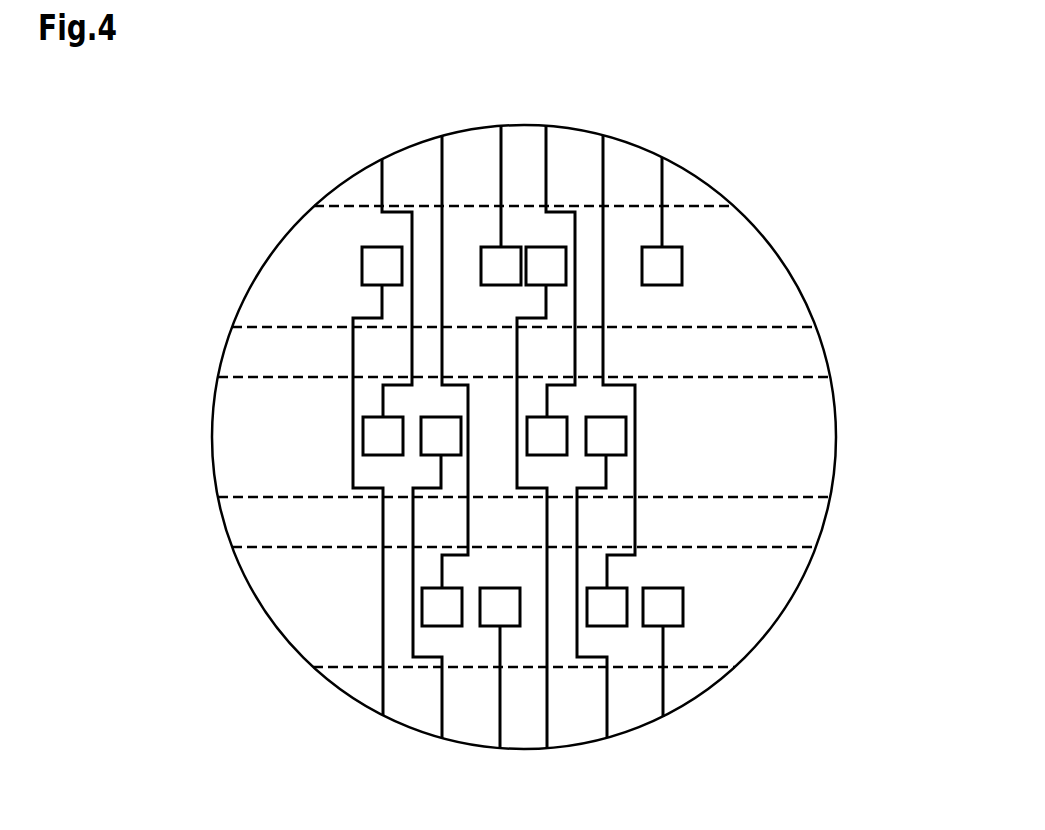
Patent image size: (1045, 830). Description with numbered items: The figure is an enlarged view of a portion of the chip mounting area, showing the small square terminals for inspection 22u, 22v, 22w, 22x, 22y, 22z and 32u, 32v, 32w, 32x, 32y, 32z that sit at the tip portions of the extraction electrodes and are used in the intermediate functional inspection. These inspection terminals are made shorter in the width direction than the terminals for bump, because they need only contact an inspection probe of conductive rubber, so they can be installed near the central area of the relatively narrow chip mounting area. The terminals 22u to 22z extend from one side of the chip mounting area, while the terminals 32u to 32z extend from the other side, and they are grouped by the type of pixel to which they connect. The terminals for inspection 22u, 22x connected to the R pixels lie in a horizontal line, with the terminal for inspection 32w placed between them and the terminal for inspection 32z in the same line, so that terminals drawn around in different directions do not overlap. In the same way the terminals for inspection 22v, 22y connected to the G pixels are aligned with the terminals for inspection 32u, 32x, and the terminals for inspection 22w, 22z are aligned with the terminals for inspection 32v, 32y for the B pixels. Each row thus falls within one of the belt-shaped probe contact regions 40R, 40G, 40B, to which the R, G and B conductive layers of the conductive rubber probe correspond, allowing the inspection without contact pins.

The terminal for inspection 22u is at (363, 247).
The terminal for inspection 22v is at (423, 417).
The terminal for inspection 22w is at (483, 627).
The terminal for inspection 22x is at (555, 247).
The terminal for inspection 22y is at (620, 417).
The terminal for inspection 22z is at (685, 613).
The terminal for inspection 32u is at (372, 457).
The terminal for inspection 32v is at (433, 626).
The terminal for inspection 32w is at (488, 247).
The terminal for inspection 32x is at (562, 455).
The terminal for inspection 32y is at (617, 626).
The terminal for inspection 32z is at (677, 247).
The probe contact region 40R is at (308, 267).
The probe contact region 40G is at (255, 438).
The probe contact region 40B is at (317, 615).